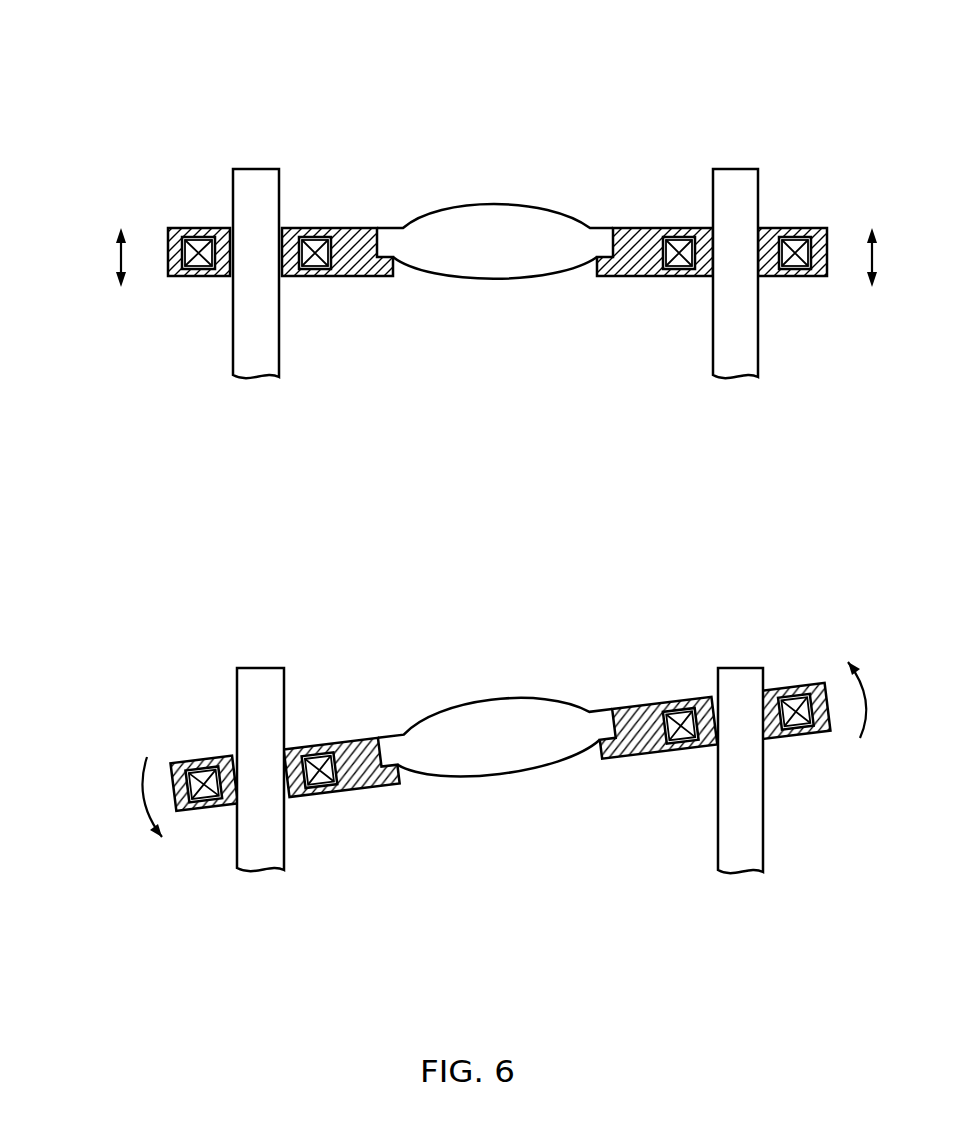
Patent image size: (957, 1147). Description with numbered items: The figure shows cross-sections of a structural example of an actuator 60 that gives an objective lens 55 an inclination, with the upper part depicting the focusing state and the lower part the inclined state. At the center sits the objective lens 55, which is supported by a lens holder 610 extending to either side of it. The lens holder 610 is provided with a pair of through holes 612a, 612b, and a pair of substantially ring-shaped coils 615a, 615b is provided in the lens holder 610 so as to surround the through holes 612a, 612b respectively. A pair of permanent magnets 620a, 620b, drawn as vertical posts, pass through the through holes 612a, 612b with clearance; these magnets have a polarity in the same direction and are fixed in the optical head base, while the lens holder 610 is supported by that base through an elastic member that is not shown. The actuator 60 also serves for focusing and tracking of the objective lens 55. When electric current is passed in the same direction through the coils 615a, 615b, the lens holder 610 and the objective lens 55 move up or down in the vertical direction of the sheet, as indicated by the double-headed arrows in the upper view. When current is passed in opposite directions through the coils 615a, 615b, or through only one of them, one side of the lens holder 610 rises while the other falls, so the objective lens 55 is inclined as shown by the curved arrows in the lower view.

The actuator 60 is at (160, 105).
The objective lens 55 is at (497, 203).
The lens holder 610 is at (342, 228).
The through hole 612a is at (230, 233).
The through hole 612b is at (763, 227).
The coil 615a is at (197, 277).
The coil 615b is at (795, 267).
The permanent magnet 620a is at (257, 173).
The permanent magnet 620b is at (735, 170).